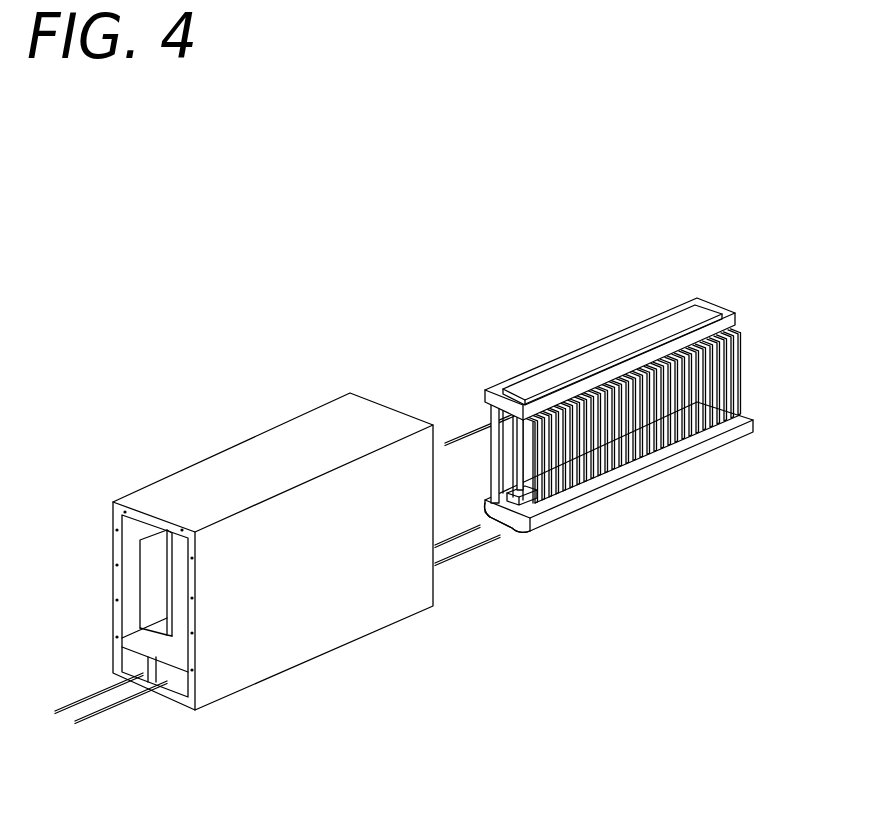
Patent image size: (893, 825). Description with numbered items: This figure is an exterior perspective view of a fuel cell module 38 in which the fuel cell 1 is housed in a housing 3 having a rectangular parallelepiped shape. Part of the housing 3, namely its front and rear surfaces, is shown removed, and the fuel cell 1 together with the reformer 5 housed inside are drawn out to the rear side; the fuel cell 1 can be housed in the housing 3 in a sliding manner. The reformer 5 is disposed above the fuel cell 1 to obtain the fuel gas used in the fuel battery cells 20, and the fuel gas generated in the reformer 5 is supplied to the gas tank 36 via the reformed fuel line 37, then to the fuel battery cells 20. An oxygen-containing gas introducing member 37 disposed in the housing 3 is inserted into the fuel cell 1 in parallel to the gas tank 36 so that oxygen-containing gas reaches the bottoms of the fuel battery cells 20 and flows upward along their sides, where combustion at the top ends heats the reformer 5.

The fuel cell module 38 is at (214, 176).
The housing 3 is at (277, 443).
The oxygen-containing gas introducing member 37 is at (180, 567).
The fuel cell 1 is at (647, 292).
The reformer 5 is at (493, 392).
The fuel battery cells 20 is at (740, 348).
The gas tank 36 is at (540, 527).